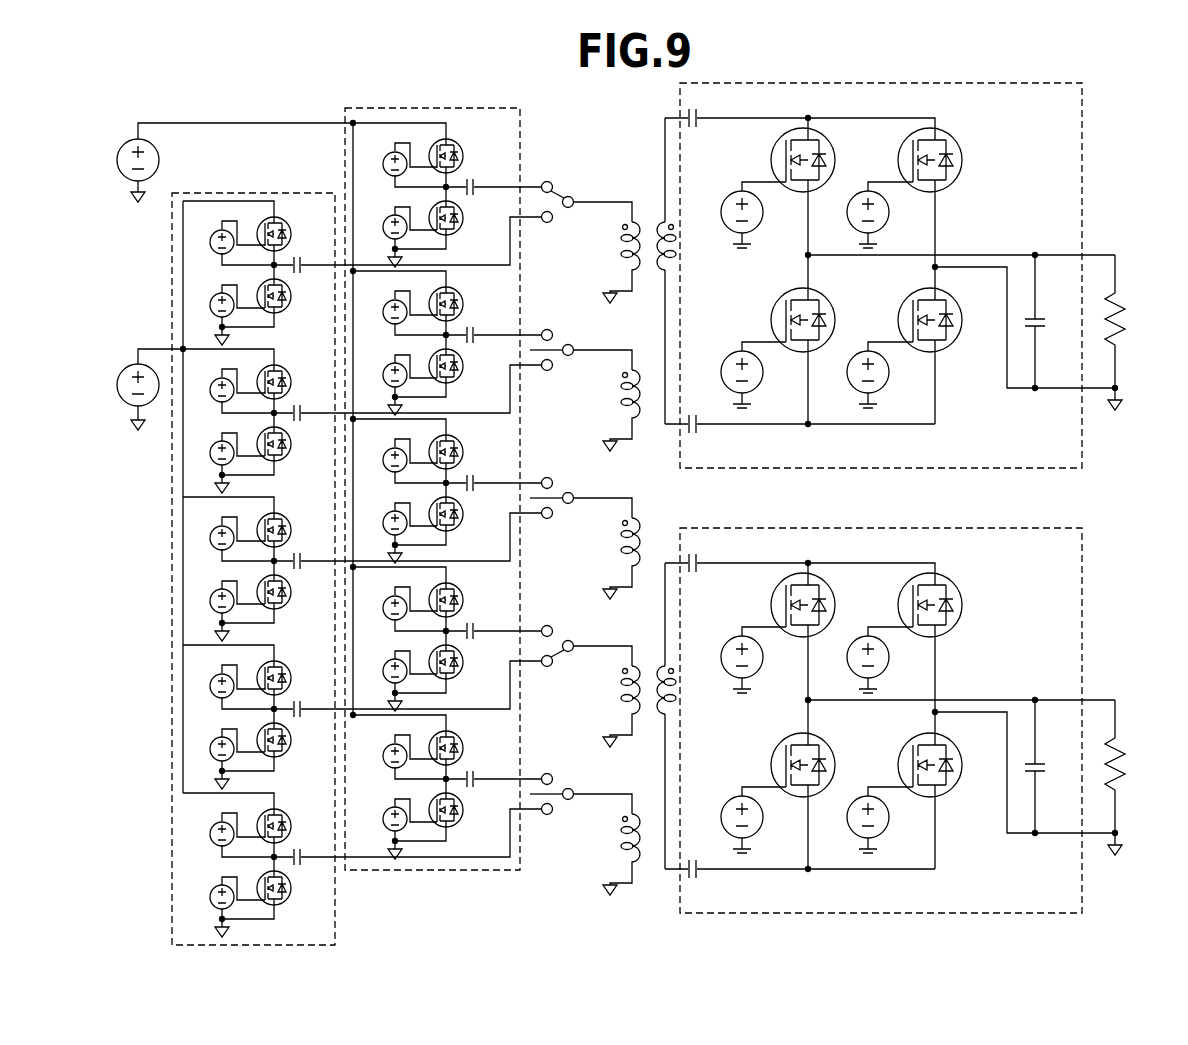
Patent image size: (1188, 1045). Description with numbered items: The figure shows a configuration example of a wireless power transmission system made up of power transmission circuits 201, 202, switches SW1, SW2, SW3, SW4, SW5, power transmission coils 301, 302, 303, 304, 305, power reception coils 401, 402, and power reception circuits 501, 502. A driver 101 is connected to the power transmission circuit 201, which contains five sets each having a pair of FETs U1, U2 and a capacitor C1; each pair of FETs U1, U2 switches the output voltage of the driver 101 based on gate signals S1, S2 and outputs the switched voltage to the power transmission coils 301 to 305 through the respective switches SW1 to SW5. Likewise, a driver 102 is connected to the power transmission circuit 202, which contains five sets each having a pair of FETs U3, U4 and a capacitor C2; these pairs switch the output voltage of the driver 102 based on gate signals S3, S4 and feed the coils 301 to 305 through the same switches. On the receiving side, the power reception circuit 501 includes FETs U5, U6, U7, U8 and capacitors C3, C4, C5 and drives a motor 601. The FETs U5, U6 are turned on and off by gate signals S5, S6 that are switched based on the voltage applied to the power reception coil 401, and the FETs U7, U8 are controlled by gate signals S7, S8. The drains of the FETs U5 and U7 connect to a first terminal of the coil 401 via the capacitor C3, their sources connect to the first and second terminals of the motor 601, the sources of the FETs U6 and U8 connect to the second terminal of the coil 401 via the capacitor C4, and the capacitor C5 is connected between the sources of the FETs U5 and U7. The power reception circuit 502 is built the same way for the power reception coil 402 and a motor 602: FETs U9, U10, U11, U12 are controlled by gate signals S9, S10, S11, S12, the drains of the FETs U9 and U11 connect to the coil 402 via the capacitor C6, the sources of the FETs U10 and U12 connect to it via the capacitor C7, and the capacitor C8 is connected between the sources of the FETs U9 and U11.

The driver 101 is at (134, 140).
The driver 102 is at (134, 364).
The power transmission circuit 201 is at (416, 108).
The power transmission circuit 202 is at (226, 193).
The power transmission coil 301 is at (593, 252).
The power transmission coil 302 is at (593, 400).
The power transmission coil 303 is at (593, 548).
The power transmission coil 304 is at (593, 696).
The power transmission coil 305 is at (593, 844).
The power reception coil 401 is at (674, 260).
The power reception coil 402 is at (674, 705).
The power reception circuit 501 is at (859, 83).
The power reception circuit 502 is at (859, 528).
The motor 601 is at (1118, 324).
The motor 602 is at (1118, 769).
The gate signal S1 is at (385, 448).
The gate signal S2 is at (385, 512).
The gate signal S3 is at (213, 526).
The gate signal S4 is at (213, 590).
The gate signal S5 is at (758, 185).
The gate signal S6 is at (758, 342).
The gate signal S7 is at (888, 192).
The gate signal S8 is at (888, 350).
The gate signal S9 is at (758, 630).
The gate signal S10 is at (758, 787).
The gate signal S11 is at (888, 637).
The gate signal S12 is at (888, 795).
The FET U1 is at (466, 443).
The FET U2 is at (465, 532).
The FET U3 is at (294, 519).
The FET U4 is at (293, 609).
The FET U5 is at (831, 146).
The FET U6 is at (831, 304).
The FET U7 is at (961, 154).
The FET U8 is at (940, 352).
The FET U9 is at (831, 591).
The FET U10 is at (831, 749).
The FET U11 is at (961, 599).
The FET U12 is at (940, 797).
The capacitor C1 is at (483, 504).
The capacitor C2 is at (310, 582).
The capacitor C3 is at (700, 108).
The capacitor C4 is at (694, 412).
The capacitor C5 is at (1041, 320).
The capacitor C6 is at (700, 553).
The capacitor C7 is at (694, 857).
The capacitor C8 is at (1041, 765).
The switch SW1 is at (561, 181).
The switch SW2 is at (558, 329).
The switch SW3 is at (558, 477).
The switch SW4 is at (561, 625).
The switch SW5 is at (558, 773).